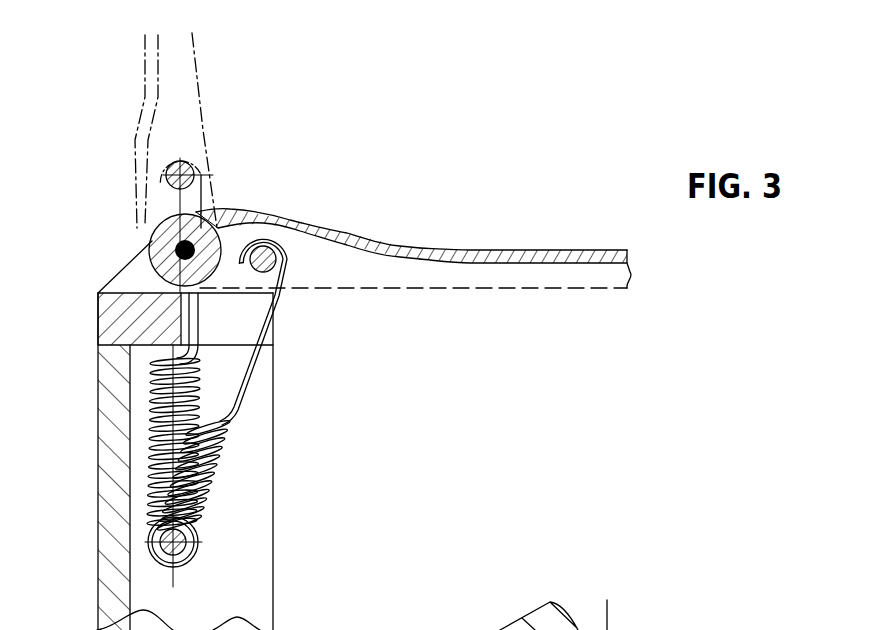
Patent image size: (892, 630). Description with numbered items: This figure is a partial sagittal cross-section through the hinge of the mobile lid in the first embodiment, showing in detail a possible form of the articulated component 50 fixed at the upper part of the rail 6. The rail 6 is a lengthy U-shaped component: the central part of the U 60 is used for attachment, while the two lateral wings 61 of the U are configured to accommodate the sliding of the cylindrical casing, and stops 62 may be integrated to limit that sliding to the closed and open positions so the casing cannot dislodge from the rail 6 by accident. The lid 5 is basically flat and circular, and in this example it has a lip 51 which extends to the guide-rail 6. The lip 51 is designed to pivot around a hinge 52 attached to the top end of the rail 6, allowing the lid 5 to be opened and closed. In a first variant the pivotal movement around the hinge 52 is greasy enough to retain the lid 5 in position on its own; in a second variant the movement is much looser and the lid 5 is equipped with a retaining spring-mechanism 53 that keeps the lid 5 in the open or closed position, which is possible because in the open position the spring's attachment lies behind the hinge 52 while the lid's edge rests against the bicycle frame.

The lid 5 is at (497, 255).
The rail 6 is at (253, 588).
The articulated component 50 is at (247, 184).
The lip 51 is at (303, 223).
The hinge 52 is at (178, 247).
The retaining spring-mechanism 53 is at (232, 443).
The central part of the U 60 is at (103, 458).
The lateral wings 61 is at (257, 525).
The stops 62 is at (103, 317).